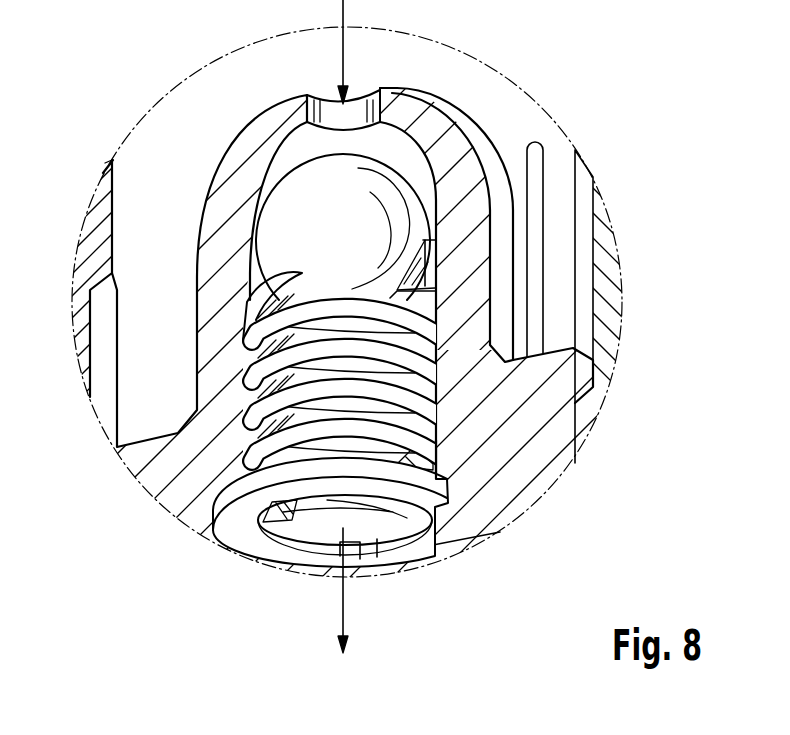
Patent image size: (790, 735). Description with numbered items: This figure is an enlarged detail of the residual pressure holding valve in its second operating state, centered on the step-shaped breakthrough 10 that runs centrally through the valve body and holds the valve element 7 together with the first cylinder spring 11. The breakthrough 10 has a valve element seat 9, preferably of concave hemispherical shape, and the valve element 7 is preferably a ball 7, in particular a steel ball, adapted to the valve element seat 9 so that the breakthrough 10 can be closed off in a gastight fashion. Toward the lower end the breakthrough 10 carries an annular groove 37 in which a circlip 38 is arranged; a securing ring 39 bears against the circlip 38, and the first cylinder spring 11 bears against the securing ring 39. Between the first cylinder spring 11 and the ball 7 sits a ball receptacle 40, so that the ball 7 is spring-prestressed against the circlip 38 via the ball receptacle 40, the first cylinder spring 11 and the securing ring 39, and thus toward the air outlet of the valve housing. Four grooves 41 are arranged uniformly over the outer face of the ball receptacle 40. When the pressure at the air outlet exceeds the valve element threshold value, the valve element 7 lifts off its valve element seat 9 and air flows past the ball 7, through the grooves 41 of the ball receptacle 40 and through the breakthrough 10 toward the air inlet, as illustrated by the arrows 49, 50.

The valve element 7 is at (300, 190).
The valve element seat 9 is at (298, 188).
The breakthrough 10 is at (373, 572).
The first cylinder spring 11 is at (252, 360).
The annular groove 37 is at (420, 478).
The circlip 38 is at (403, 562).
The securing ring 39 is at (437, 462).
The ball receptacle 40 is at (403, 275).
The groove 41 is at (433, 240).
The arrow 49 is at (338, 616).
The arrow 50 is at (343, 18).